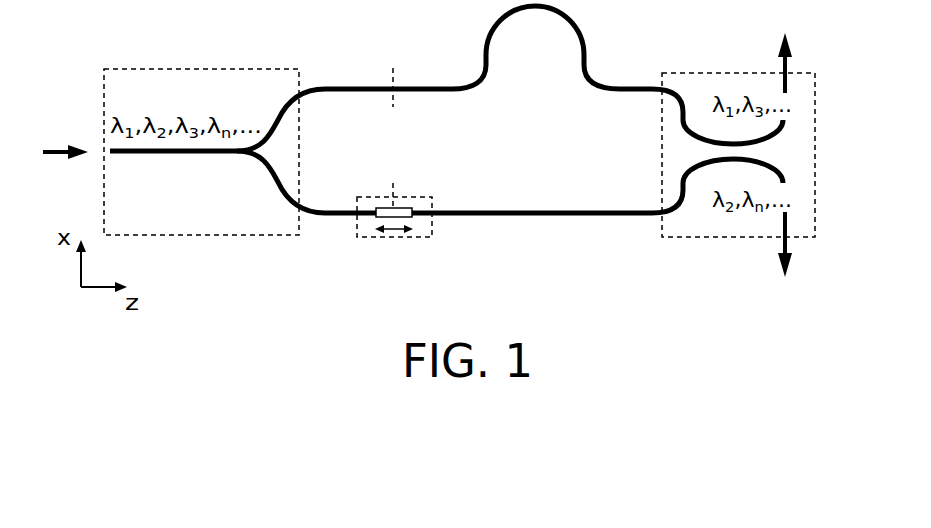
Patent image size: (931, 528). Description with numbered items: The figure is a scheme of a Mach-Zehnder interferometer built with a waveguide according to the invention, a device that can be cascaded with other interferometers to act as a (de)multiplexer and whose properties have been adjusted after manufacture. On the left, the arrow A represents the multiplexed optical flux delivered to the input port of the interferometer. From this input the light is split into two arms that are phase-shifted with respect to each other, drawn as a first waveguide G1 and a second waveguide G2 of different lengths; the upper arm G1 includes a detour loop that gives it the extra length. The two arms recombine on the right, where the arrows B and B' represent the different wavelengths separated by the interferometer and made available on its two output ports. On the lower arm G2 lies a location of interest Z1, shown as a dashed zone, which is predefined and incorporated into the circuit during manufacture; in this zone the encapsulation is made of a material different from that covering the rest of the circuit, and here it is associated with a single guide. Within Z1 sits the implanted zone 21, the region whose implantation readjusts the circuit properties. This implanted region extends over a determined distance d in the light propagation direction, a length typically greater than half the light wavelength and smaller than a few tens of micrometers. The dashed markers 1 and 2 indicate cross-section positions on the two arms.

The input optical flux arrow A is at (50, 149).
The first output arrow B is at (756, 61).
The second output arrow B' is at (747, 244).
The first waveguide G1 is at (357, 87).
The second waveguide G2 is at (520, 215).
The location of interest Z1 is at (432, 227).
The implanted zone 21 is at (402, 212).
The implanted region length d is at (399, 232).
The first cross-section position 1 is at (399, 76).
The second cross-section position 2 is at (400, 189).